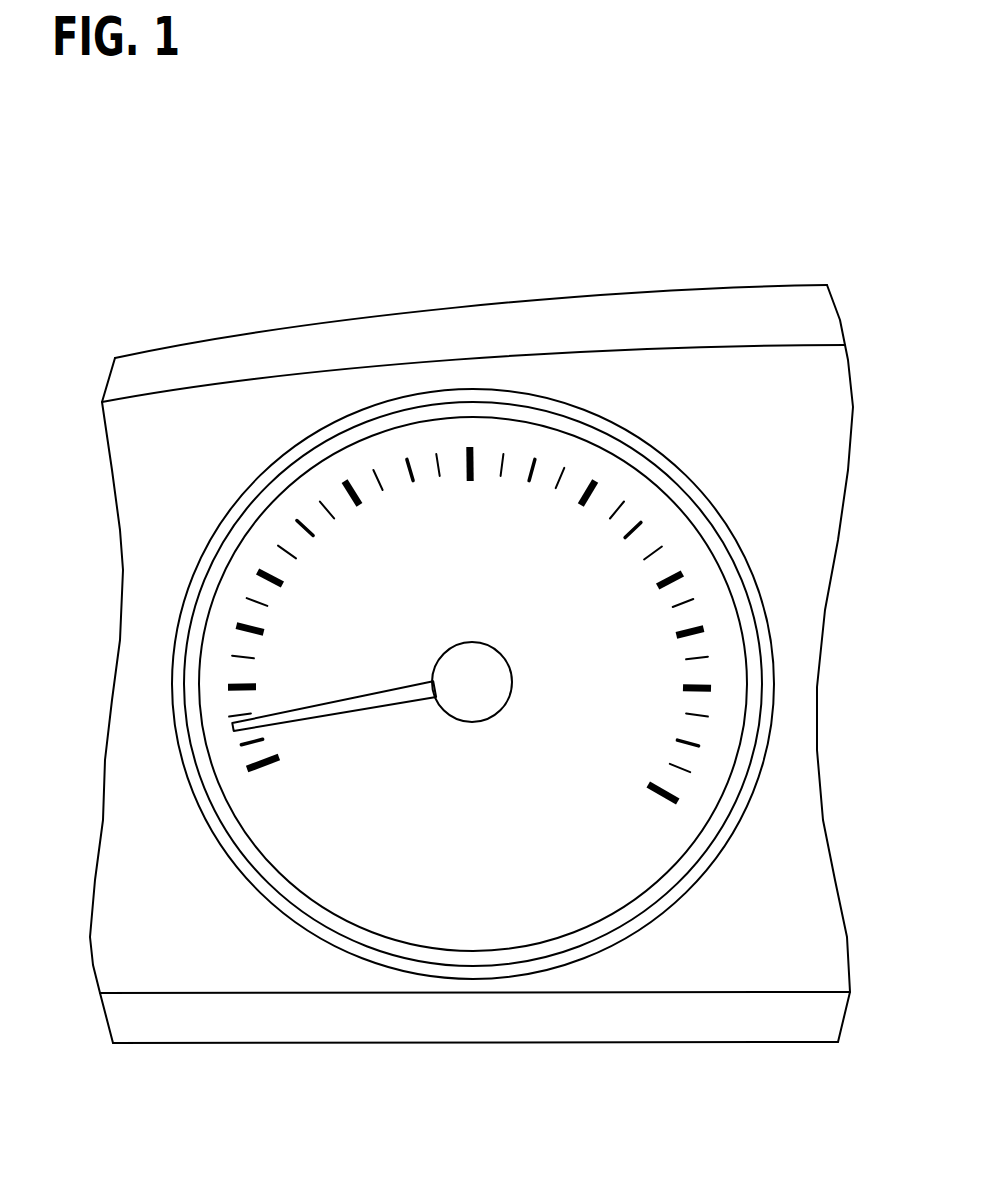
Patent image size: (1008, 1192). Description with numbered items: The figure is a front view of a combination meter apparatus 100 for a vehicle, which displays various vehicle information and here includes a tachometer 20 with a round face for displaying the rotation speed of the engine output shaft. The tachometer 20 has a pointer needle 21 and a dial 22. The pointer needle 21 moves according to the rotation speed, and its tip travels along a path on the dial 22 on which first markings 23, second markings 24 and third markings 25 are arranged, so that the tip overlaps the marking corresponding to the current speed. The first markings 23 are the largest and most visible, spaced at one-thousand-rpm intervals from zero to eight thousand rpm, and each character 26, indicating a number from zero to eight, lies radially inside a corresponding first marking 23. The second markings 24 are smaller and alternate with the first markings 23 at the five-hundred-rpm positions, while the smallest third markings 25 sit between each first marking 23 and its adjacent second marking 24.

The combination meter apparatus 100 is at (198, 330).
The tachometer 20 is at (753, 440).
The pointer needle 21 is at (335, 707).
The dial 22 is at (313, 833).
The first marking 23 is at (705, 685).
The second marking 24 is at (697, 627).
The third marking 25 is at (702, 657).
The character 26 is at (667, 687).